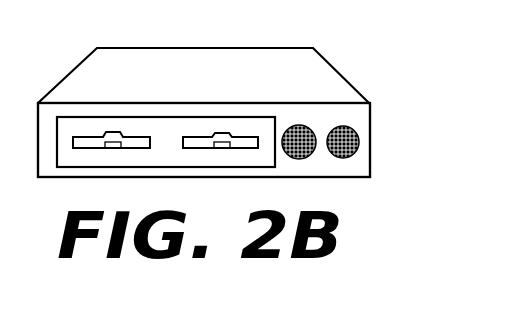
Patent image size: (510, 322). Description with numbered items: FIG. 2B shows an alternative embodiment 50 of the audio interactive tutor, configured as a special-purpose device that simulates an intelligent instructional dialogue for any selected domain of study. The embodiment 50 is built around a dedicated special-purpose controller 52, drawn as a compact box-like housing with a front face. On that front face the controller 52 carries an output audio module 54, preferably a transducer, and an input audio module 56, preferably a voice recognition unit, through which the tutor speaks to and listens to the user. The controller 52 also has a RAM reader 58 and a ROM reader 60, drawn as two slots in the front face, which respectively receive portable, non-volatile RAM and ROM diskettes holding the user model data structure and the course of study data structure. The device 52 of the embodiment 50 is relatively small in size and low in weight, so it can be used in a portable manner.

The embodiment 50 is at (333, 100).
The special-purpose controller 52 is at (232, 48).
The output audio module 54 is at (358, 138).
The input audio module 56 is at (302, 125).
The RAM reader 58 is at (131, 139).
The ROM reader 60 is at (237, 138).